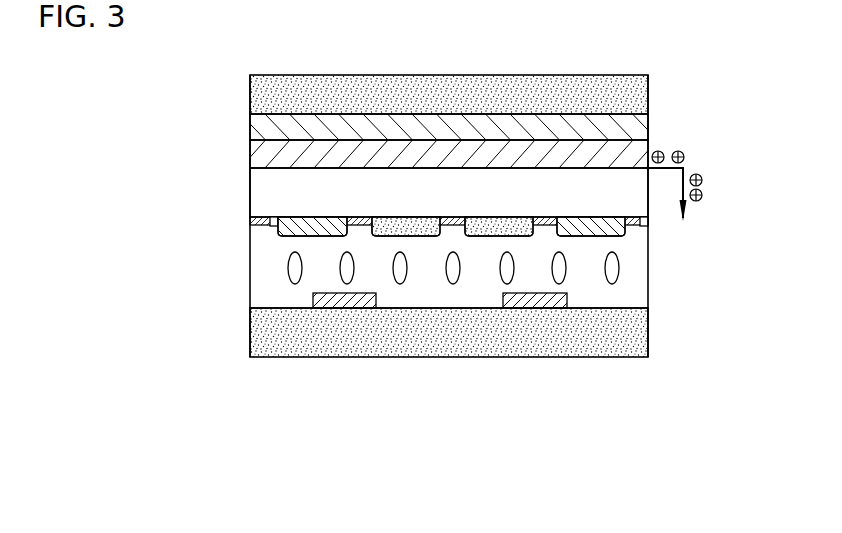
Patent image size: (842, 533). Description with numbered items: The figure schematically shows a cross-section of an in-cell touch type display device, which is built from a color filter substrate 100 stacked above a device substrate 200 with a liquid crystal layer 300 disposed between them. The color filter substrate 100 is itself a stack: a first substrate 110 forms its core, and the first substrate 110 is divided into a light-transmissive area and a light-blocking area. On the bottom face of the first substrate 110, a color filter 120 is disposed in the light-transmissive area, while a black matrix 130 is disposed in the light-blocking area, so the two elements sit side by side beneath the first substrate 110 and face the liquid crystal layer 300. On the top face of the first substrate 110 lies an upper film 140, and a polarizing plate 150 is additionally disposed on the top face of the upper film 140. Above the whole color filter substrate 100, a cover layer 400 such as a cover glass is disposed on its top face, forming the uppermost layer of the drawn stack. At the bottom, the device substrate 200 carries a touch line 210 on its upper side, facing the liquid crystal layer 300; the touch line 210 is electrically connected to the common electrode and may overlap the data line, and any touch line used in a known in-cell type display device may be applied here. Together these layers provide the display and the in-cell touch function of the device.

The color filter substrate 100 is at (170, 128).
The first substrate 110 is at (262, 192).
The color filter 120 is at (280, 234).
The black matrix 130 is at (270, 222).
The upper film 140 is at (252, 154).
The polarizing plate 150 is at (252, 127).
The device substrate 200 is at (240, 329).
The touch line 210 is at (313, 298).
The liquid crystal layer 300 is at (627, 286).
The cover layer 400 is at (268, 92).